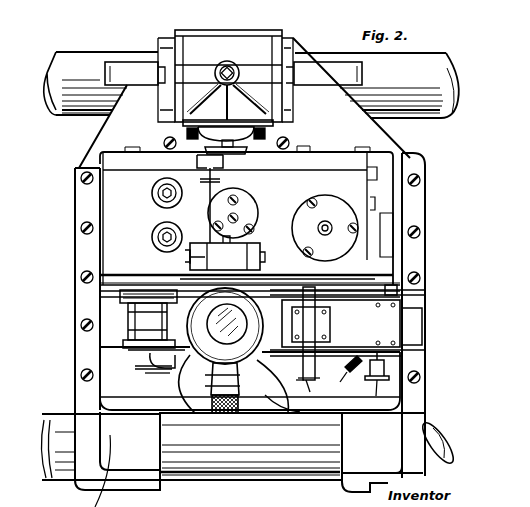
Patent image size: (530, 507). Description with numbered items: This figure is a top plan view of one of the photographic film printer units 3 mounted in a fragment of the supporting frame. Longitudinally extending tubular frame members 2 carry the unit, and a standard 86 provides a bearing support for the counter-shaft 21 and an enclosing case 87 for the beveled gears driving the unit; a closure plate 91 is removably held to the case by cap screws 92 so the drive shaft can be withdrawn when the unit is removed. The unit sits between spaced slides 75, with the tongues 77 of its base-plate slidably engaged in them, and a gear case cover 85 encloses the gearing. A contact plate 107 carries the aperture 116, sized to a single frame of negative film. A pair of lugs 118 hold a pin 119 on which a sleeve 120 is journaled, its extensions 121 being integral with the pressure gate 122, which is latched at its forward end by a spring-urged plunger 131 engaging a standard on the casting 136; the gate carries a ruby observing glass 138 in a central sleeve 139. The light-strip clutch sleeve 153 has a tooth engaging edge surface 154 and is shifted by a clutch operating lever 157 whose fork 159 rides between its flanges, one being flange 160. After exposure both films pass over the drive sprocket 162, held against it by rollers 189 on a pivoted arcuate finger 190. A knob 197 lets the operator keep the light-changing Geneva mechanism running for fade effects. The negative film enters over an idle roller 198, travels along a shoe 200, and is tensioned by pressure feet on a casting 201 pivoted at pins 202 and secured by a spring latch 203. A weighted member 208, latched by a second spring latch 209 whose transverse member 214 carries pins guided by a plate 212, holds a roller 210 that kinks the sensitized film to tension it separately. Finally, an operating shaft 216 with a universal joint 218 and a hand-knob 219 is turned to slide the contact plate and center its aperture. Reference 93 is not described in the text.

The tubular frame member 2 is at (88, 55).
The film printer unit 3 is at (225, 63).
The counter-shaft 21 is at (128, 70).
The slide 75 is at (88, 299).
The tongue 77 is at (100, 400).
The gear case cover 85 is at (335, 151).
The standard 86 is at (385, 143).
The enclosing case 87 is at (205, 35).
The closure plate 91 is at (150, 305).
The cap screw 92 is at (190, 133).
The suspension bracket 93 is at (205, 148).
The contact plate 107 is at (218, 365).
The aperture 116 is at (258, 246).
The lug 118 is at (186, 224).
The pin 119 is at (190, 257).
The sleeve 120 is at (237, 245).
The extension 121 is at (168, 280).
The pressure gate 122 is at (226, 383).
The plunger 131 is at (224, 414).
The casting 136 is at (258, 405).
The observing glass 138 is at (228, 334).
The sleeve 139 is at (212, 398).
The clutch sleeve 153 is at (150, 356).
The tooth engaging edge surface 154 is at (150, 352).
The clutch operating lever 157 is at (285, 405).
The fork 159 is at (168, 372).
The flange 160 is at (160, 368).
The drive sprocket 162 is at (225, 326).
The roller 189 is at (165, 316).
The arcuate finger 190 is at (148, 290).
The knob 197 is at (327, 222).
The idle roller 198 is at (425, 340).
The shoe 200 is at (425, 360).
The casting 201 is at (392, 324).
The pin 202 is at (438, 284).
The spring latch 203 is at (376, 397).
The weighted member 208 is at (392, 320).
The spring latch 209 is at (317, 394).
The roller 210 is at (305, 285).
The plate 212 is at (315, 333).
The transverse member 214 is at (341, 366).
The operating shaft 216 is at (333, 382).
The universal joint 218 is at (291, 387).
The hand-knob 219 is at (372, 376).